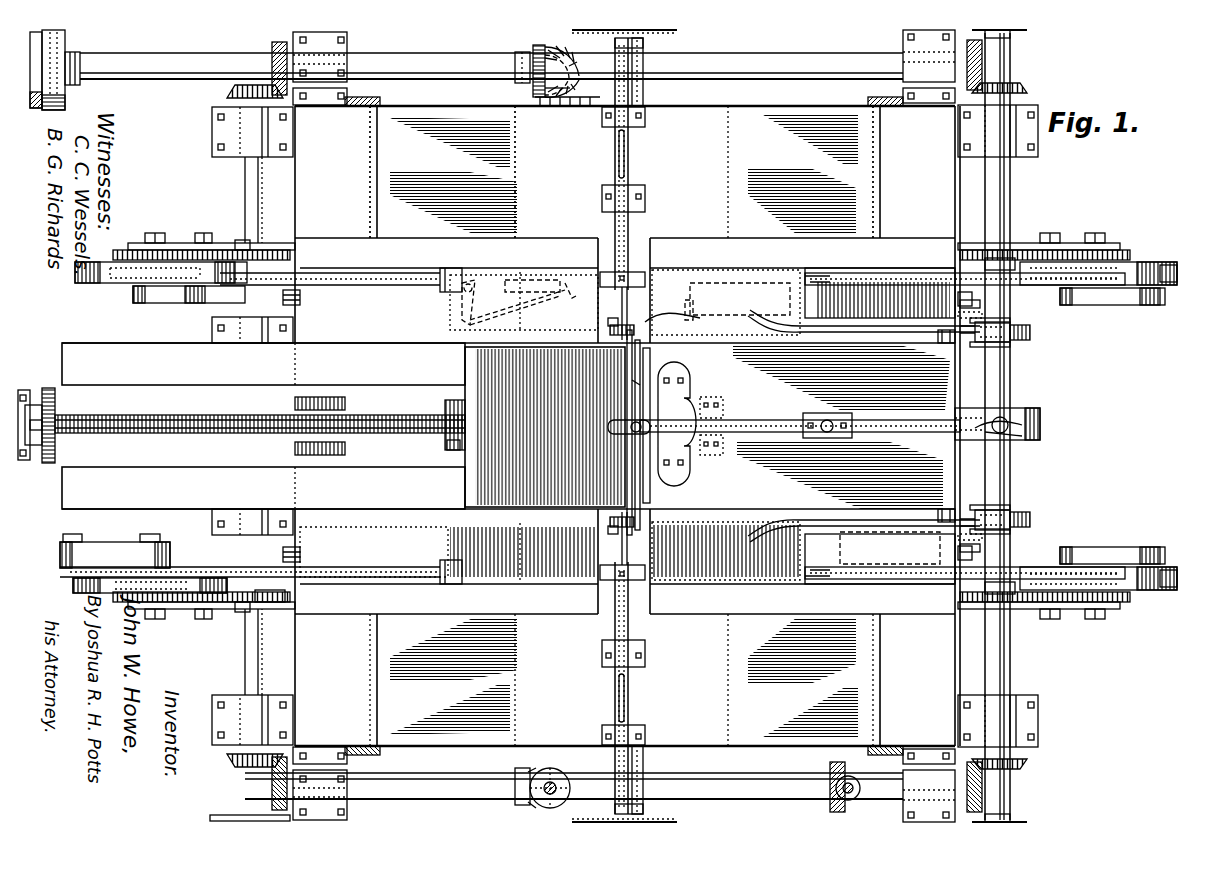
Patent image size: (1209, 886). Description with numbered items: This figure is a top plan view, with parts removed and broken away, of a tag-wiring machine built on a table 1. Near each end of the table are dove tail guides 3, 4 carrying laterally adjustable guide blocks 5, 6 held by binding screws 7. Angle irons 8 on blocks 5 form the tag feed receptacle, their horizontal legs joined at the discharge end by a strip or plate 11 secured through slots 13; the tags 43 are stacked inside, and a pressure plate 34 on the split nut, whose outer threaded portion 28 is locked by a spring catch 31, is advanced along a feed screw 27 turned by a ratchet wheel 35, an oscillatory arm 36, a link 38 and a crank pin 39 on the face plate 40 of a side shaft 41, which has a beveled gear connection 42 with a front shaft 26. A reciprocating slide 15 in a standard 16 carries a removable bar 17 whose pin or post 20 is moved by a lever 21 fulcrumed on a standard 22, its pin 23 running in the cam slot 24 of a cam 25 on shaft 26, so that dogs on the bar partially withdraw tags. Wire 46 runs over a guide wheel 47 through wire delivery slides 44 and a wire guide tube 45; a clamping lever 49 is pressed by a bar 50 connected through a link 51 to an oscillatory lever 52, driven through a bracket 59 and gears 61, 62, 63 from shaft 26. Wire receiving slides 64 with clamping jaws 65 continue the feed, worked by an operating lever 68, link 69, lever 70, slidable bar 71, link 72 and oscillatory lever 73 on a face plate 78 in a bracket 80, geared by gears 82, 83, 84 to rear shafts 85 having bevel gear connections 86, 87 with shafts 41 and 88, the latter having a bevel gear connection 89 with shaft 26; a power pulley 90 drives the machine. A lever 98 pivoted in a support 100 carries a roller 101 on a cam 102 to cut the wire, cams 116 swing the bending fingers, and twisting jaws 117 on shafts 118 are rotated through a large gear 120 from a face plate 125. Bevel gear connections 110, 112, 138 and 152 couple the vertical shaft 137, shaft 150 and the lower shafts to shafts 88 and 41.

The table 1 is at (601, 400).
The dove tail guides 3 is at (402, 393).
The dove tail guides 4 is at (819, 393).
The guide blocks 5 is at (446, 422).
The guide blocks 6 is at (802, 423).
The binding screws 7 is at (300, 300).
The angle irons 8 is at (263, 422).
The strip or plate 11 is at (648, 385).
The slots 13 is at (630, 302).
The reciprocating slide 15 is at (652, 508).
The standard 16 is at (640, 352).
The removable bar 17 is at (655, 368).
The pin or post 20 is at (648, 440).
The lever 21 is at (760, 420).
The standard 22 is at (827, 420).
The pin 23 is at (1005, 420).
The cam slot 24 is at (1040, 432).
The cam 25 is at (1040, 415).
The shaft 26 is at (1012, 57).
The feed screw 27 is at (248, 415).
The outer threaded portion 28 is at (454, 425).
The spring catch 31 is at (450, 447).
The pressure plate 34 is at (466, 352).
The ratchet wheel 35 is at (56, 405).
The oscillatory arm 36 is at (46, 436).
The link 38 is at (62, 110).
The crank pin 39 is at (66, 38).
The face plate 40 is at (80, 64).
The shaft 41 is at (172, 66).
The beveled gear connection 42 is at (1015, 85).
The tags 43 is at (466, 488).
The wire delivery slides 44 is at (788, 425).
The wire guide tube 45 is at (677, 318).
The wire 46 is at (850, 318).
The guide wheel 47 is at (973, 425).
The clamping lever 49 is at (722, 294).
The bar 50 is at (812, 272).
The link 51 is at (898, 278).
The oscillatory lever 52 is at (1065, 304).
The bracket 59 is at (960, 245).
The gear 61 is at (1130, 256).
The idler gear 62 is at (1050, 248).
The gear 63 is at (1012, 258).
The wire receiving slides 64 is at (449, 426).
The clamping jaws 65 is at (438, 555).
The operating lever 68 is at (572, 298).
The link 69 is at (538, 322).
The lever 70 is at (481, 302).
The slidable bar 71 is at (448, 280).
The link 72 is at (330, 275).
The oscillatory lever 73 is at (177, 302).
The face plate 78 is at (125, 272).
The bracket 80 is at (275, 602).
The gear 82 is at (150, 250).
The gear 83 is at (198, 250).
The gear 84 is at (245, 252).
The shaft 85 is at (245, 190).
The bevel gear connection 86 is at (275, 48).
The bevel gear connection 87 is at (245, 780).
The shaft 88 is at (432, 785).
The bevel gear connection 89 is at (1012, 793).
The power pulley 90 is at (218, 820).
The lever 98 is at (900, 332).
The support 100 is at (940, 343).
The roller 101 is at (1010, 342).
The cam 102 is at (1030, 335).
The bevel gear connection 110 is at (570, 88).
The bevel gear connection 112 is at (548, 50).
The cams 116 is at (618, 65).
The twisting jaws 117 is at (636, 280).
The shafts 118 is at (640, 48).
The large gear 120 is at (677, 30).
The face plate 125 is at (1027, 30).
The vertical shaft 137 is at (556, 795).
The bevel gear connection 138 is at (530, 798).
The shaft 150 is at (850, 798).
The bevel gear connection 152 is at (835, 772).